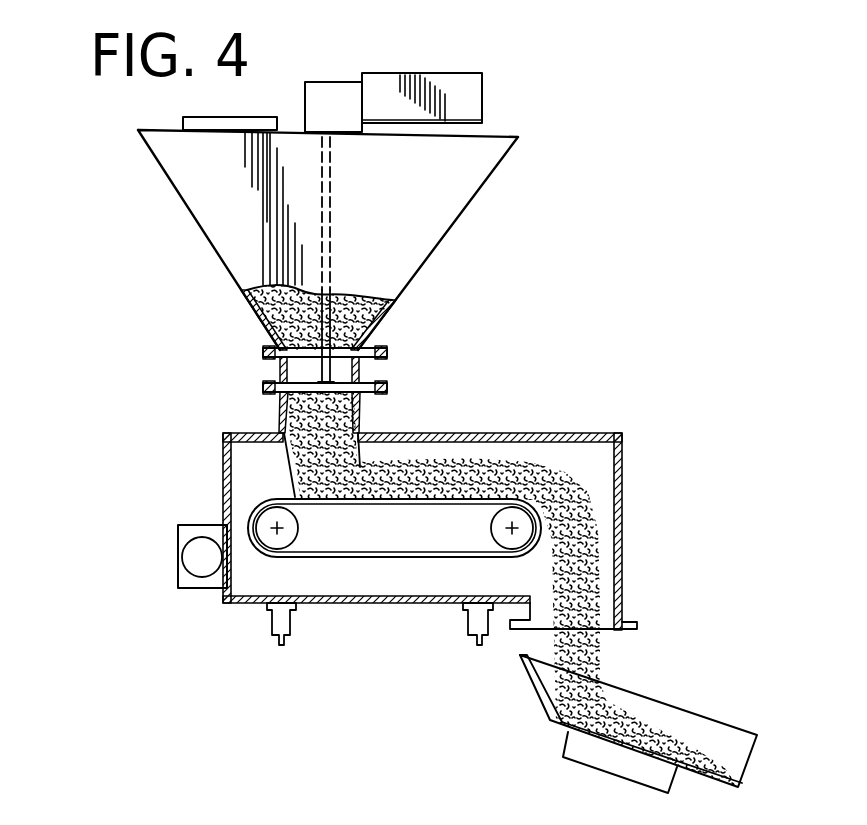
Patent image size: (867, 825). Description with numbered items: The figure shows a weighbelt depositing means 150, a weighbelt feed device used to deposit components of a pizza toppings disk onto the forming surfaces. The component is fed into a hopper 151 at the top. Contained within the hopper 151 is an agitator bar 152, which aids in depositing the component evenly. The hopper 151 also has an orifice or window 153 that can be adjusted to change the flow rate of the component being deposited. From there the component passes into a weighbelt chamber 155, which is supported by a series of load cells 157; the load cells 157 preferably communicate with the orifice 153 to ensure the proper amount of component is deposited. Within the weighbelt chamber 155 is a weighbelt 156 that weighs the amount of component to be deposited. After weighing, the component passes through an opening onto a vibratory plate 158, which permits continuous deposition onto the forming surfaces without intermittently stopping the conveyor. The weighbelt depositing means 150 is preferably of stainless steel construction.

The weighbelt depositing means 150 is at (232, 279).
The hopper 151 is at (166, 175).
The agitator bar 152 is at (388, 205).
The orifice or window 153 is at (370, 367).
The weighbelt chamber 155 is at (226, 463).
The weighbelt 156 is at (293, 557).
The load cells 157 is at (292, 625).
The vibratory plate 158 is at (650, 693).